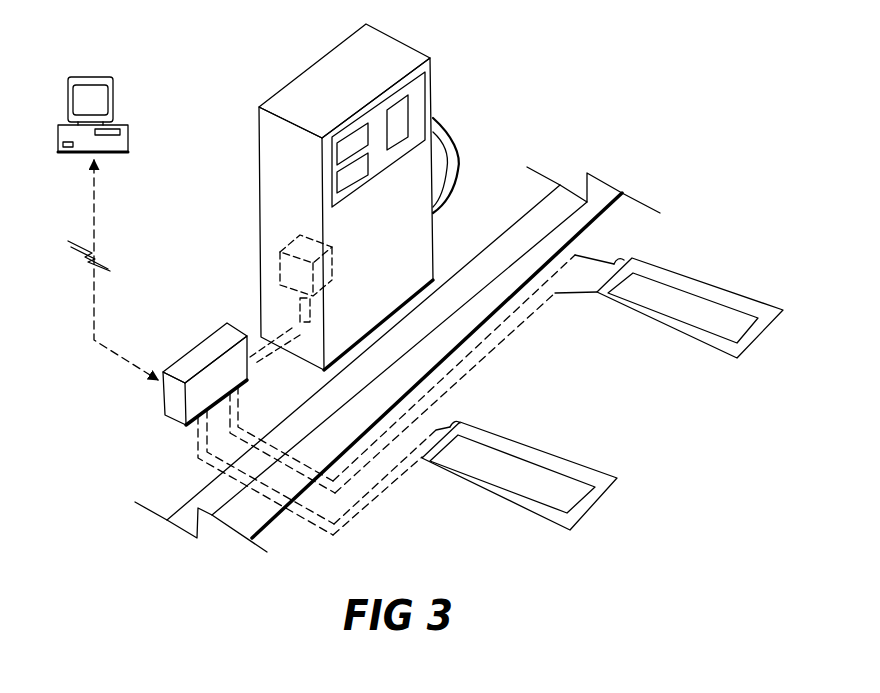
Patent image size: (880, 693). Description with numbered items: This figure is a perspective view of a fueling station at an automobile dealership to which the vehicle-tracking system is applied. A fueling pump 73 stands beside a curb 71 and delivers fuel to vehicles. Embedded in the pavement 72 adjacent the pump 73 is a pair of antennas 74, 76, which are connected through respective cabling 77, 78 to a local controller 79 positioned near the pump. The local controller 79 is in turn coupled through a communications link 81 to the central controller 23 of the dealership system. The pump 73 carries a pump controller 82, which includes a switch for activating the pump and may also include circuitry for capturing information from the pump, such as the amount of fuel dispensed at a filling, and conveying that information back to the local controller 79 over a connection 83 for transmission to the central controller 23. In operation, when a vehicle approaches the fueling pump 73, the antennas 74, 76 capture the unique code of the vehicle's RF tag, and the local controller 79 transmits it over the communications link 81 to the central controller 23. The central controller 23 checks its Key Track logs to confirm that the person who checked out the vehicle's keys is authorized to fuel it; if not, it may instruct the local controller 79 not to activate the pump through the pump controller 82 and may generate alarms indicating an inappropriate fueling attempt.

The central controller 23 is at (130, 115).
The curb 71 is at (535, 206).
The pavement 72 is at (612, 405).
The fueling pump 73 is at (442, 65).
The antenna 74 is at (593, 454).
The antenna 76 is at (766, 286).
The cabling 77 is at (307, 522).
The cabling 78 is at (517, 327).
The local controller 79 is at (163, 403).
The communications link 81 is at (95, 288).
The pump controller 82 is at (278, 275).
The dispenser cable 83 is at (270, 356).